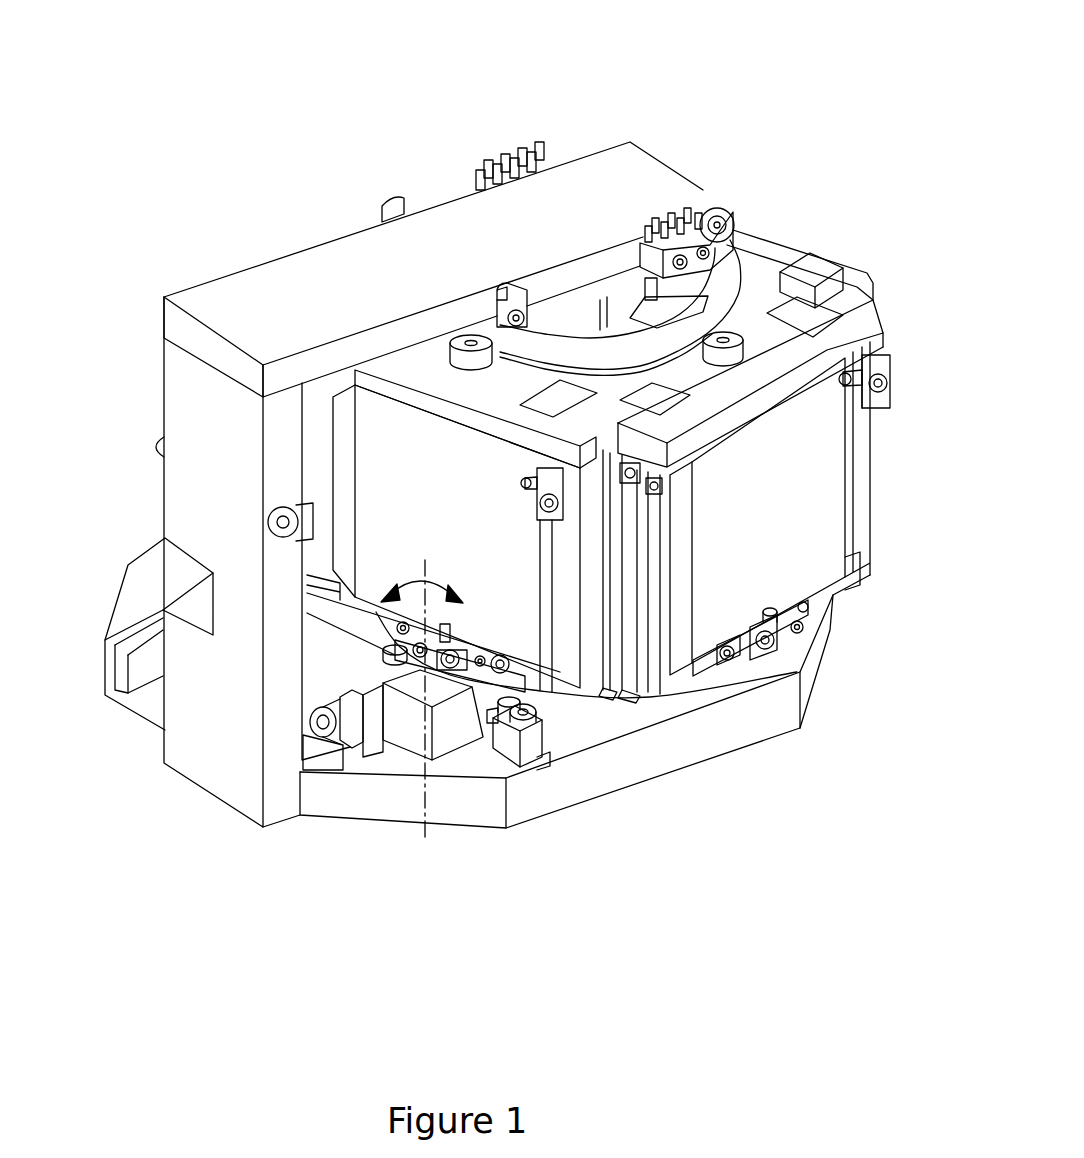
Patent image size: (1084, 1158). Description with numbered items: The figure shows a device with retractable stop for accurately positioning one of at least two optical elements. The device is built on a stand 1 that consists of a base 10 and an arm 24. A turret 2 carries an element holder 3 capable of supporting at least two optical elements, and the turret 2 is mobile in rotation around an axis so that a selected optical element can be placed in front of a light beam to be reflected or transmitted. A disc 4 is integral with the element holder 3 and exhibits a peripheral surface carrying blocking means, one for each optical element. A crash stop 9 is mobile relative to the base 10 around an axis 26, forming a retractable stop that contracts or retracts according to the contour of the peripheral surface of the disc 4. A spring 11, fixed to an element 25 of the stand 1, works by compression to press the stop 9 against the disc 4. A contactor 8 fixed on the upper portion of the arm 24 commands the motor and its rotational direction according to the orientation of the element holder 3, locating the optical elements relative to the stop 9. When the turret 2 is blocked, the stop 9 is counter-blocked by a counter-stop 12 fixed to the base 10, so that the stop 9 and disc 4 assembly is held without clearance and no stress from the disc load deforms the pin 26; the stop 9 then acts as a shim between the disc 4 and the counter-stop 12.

The stand 1 is at (131, 730).
The turret 2 is at (800, 232).
The element holder 3 is at (807, 568).
The disc 4 is at (657, 688).
The contactor 8 is at (500, 150).
The crash stop 9 is at (392, 672).
The base 10 is at (767, 720).
The spring 11 is at (395, 740).
The counter-stop 12 is at (531, 766).
The arm 24 is at (273, 273).
The element of the stand 25 is at (348, 750).
The axis 26 is at (426, 566).